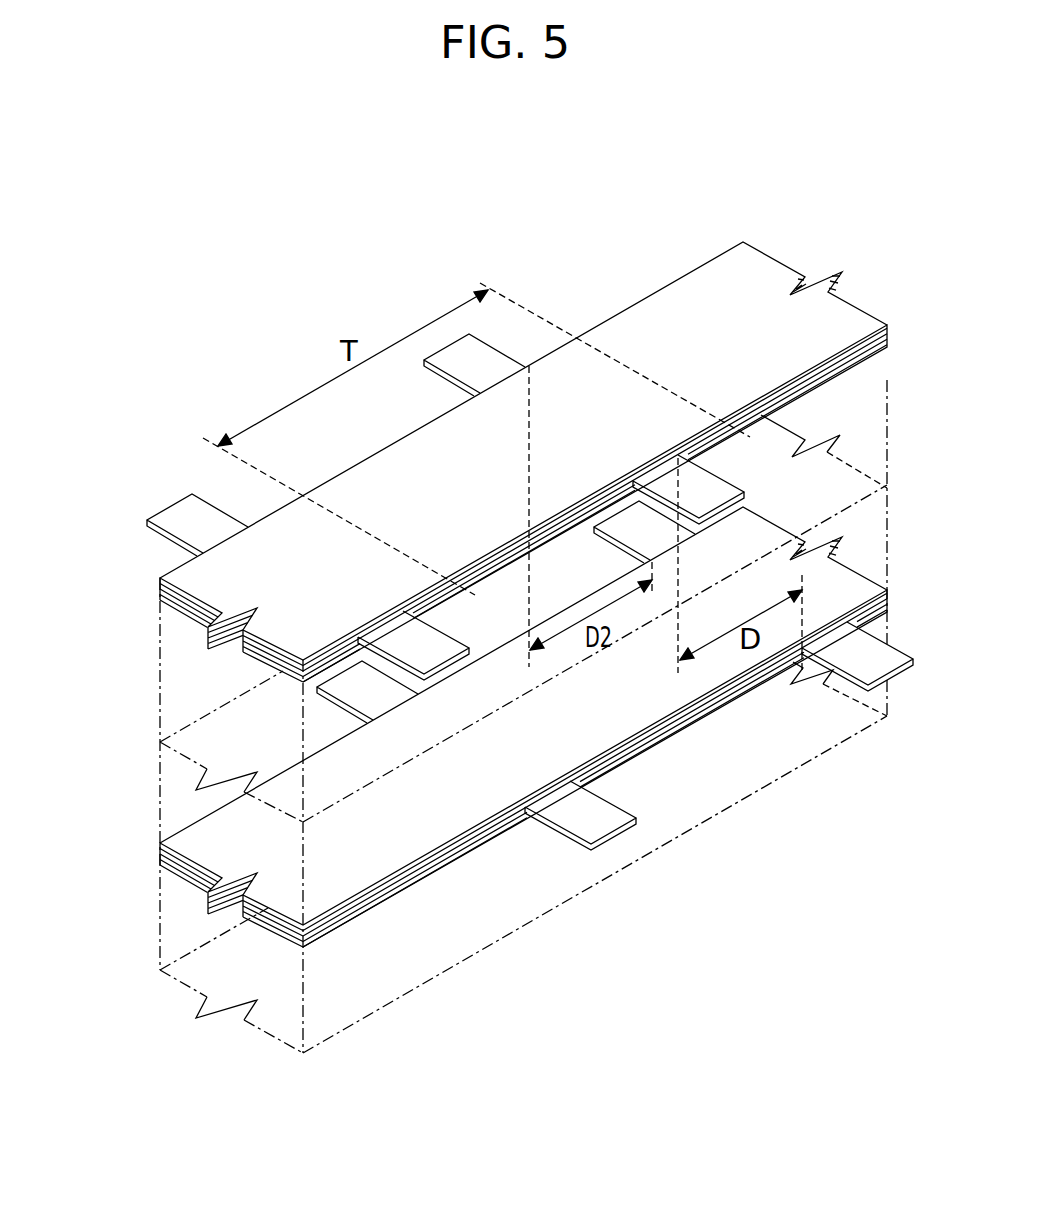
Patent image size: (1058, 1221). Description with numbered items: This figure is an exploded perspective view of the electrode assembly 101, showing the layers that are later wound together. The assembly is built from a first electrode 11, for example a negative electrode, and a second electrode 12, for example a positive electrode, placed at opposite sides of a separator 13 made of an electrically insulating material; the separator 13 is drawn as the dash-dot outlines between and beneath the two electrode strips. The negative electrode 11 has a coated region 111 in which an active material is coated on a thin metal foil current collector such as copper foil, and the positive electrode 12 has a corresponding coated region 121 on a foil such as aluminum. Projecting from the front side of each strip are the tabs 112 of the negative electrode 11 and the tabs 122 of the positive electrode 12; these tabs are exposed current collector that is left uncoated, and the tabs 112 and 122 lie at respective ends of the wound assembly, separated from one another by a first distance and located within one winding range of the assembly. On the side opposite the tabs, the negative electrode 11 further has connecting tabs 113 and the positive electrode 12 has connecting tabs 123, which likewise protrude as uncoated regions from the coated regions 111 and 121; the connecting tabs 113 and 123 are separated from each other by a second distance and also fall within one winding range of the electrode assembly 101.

The electrode assembly 101 is at (463, 253).
The first electrode 11 is at (184, 878).
The coated region 111 is at (395, 837).
The tab 112 is at (857, 663).
The connecting tab 113 is at (358, 693).
The second electrode 12 is at (184, 613).
The coated region 121 is at (195, 578).
The tab 122 is at (433, 640).
The connecting tab 123 is at (187, 512).
The separator 13 is at (337, 805).